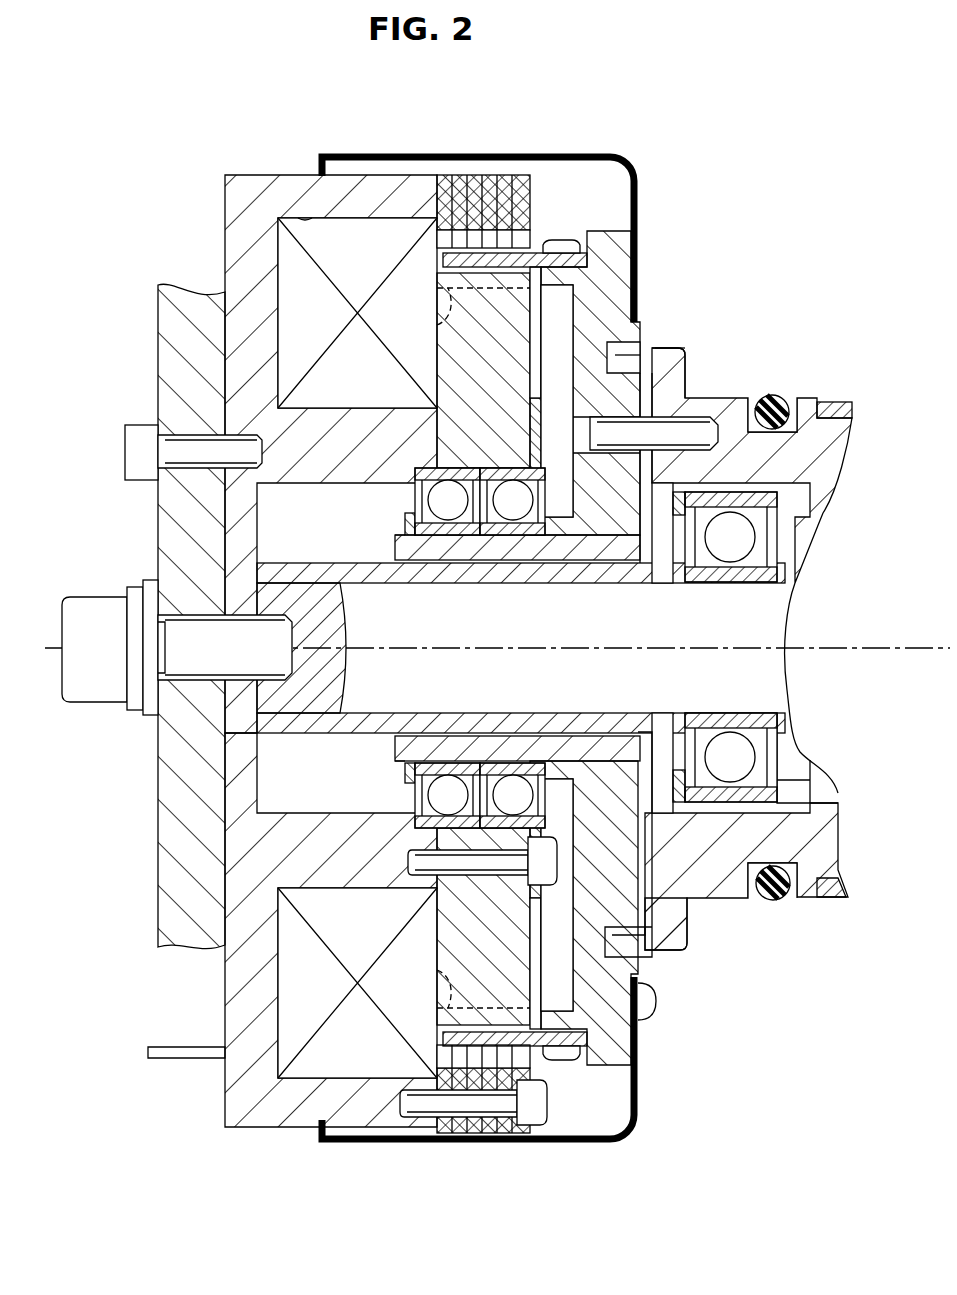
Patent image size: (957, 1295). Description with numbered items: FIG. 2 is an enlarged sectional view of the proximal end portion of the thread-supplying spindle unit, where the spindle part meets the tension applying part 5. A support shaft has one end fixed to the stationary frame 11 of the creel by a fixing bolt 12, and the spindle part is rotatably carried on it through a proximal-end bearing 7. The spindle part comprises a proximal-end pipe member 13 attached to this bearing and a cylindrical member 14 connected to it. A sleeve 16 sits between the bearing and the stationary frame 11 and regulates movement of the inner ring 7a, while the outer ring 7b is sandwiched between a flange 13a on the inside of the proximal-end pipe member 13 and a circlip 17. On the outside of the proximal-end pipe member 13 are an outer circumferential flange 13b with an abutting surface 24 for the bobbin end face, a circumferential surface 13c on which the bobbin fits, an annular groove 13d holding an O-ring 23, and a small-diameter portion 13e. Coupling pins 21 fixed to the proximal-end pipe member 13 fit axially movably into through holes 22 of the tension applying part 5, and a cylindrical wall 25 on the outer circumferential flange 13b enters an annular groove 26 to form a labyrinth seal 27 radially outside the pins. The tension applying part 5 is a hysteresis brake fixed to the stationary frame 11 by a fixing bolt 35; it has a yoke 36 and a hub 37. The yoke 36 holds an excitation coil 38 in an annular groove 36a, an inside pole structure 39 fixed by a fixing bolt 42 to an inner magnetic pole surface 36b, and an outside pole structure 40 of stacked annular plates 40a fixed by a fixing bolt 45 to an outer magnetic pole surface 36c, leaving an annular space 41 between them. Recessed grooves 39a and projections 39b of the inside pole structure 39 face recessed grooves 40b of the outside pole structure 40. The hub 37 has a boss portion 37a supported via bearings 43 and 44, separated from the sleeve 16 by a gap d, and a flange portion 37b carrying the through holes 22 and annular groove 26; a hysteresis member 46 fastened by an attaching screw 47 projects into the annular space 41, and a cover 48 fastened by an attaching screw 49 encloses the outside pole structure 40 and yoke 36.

The tension applying part 5 is at (274, 634).
The proximal-end bearing 7 is at (731, 647).
The inner ring 7a is at (722, 586).
The outer ring 7b is at (758, 790).
The stationary frame 11 is at (158, 352).
The fixing bolt 12 is at (85, 597).
The proximal-end pipe member 13 is at (750, 646).
The flange 13a is at (795, 790).
The outer circumferential flange 13b is at (672, 930).
The circumferential surface 13c is at (740, 398).
The annular groove 13d is at (760, 895).
The small-diameter portion 13e is at (830, 900).
The cylindrical member 14 is at (832, 398).
The sleeve 16 is at (650, 585).
The circlip 17 is at (676, 785).
The coupling pin 21 is at (680, 432).
The through hole 22 is at (582, 415).
The O-ring 23 is at (780, 900).
The abutting surface 24 is at (668, 918).
The cylindrical wall 25 is at (668, 345).
The annular groove 26 is at (642, 346).
The labyrinth seal 27 is at (672, 350).
The fixing bolt 35 is at (125, 455).
The yoke 36 is at (222, 186).
The annular groove 36a is at (302, 216).
The inner magnetic pole surface 36b is at (450, 410).
The outer magnetic pole surface 36c is at (455, 190).
The hub 37 is at (621, 232).
The boss portion 37a is at (588, 550).
The flange portion 37b is at (608, 290).
The excitation coil 38 is at (290, 258).
The inside pole structure 39 is at (442, 649).
The recessed groove 39a is at (460, 350).
The projection 39b is at (437, 288).
The outside pole structure 40 is at (483, 624).
The annular plate 40a is at (522, 200).
The recessed groove 40b is at (440, 240).
The annular space 41 is at (445, 260).
The fixing bolt 42 is at (410, 862).
The bearing 43 is at (450, 505).
The bearing 44 is at (515, 505).
The fixing bolt 45 is at (550, 1100).
The hysteresis member 46 is at (522, 253).
The attaching screw 47 is at (562, 242).
The cover 48 is at (640, 1100).
The attaching screw 49 is at (657, 1002).
The gap d is at (405, 565).